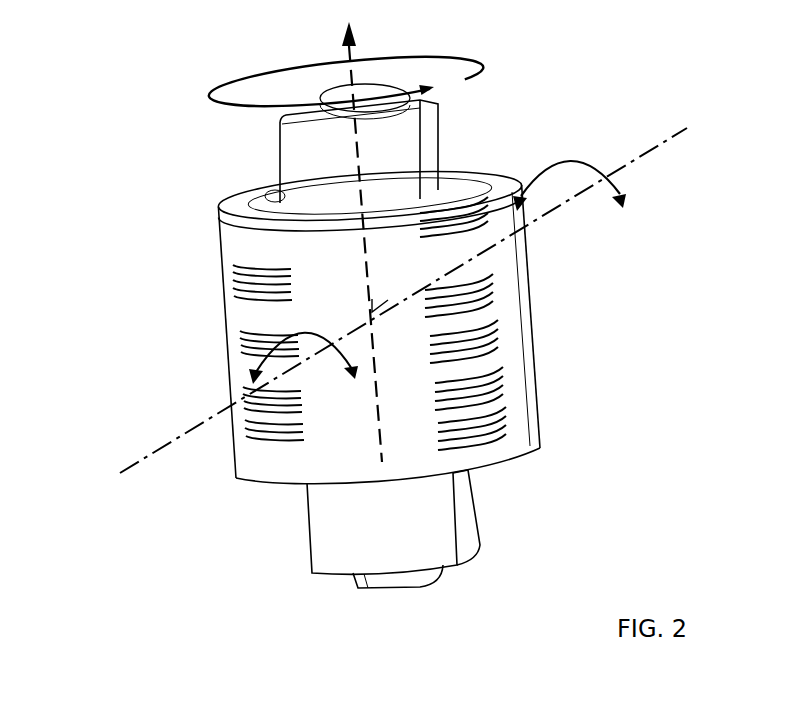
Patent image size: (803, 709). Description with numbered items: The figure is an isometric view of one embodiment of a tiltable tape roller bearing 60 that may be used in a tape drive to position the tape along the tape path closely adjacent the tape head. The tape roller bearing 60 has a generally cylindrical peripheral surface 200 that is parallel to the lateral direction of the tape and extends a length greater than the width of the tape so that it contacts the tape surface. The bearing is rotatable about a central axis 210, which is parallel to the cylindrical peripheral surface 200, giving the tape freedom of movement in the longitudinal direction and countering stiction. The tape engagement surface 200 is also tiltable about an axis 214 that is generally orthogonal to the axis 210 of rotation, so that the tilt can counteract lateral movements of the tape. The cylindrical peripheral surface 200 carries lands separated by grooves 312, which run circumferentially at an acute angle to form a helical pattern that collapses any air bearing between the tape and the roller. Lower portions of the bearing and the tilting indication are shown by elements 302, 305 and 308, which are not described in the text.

The tape roller bearing 60 is at (143, 270).
The cylindrical peripheral surface 200 is at (488, 366).
The central axis 210 is at (355, 147).
The axis 214 is at (665, 142).
The lower flange 302 is at (278, 525).
The end stub 305 is at (393, 602).
The tilt direction arrows 308 is at (373, 320).
The grooves 312 is at (488, 300).